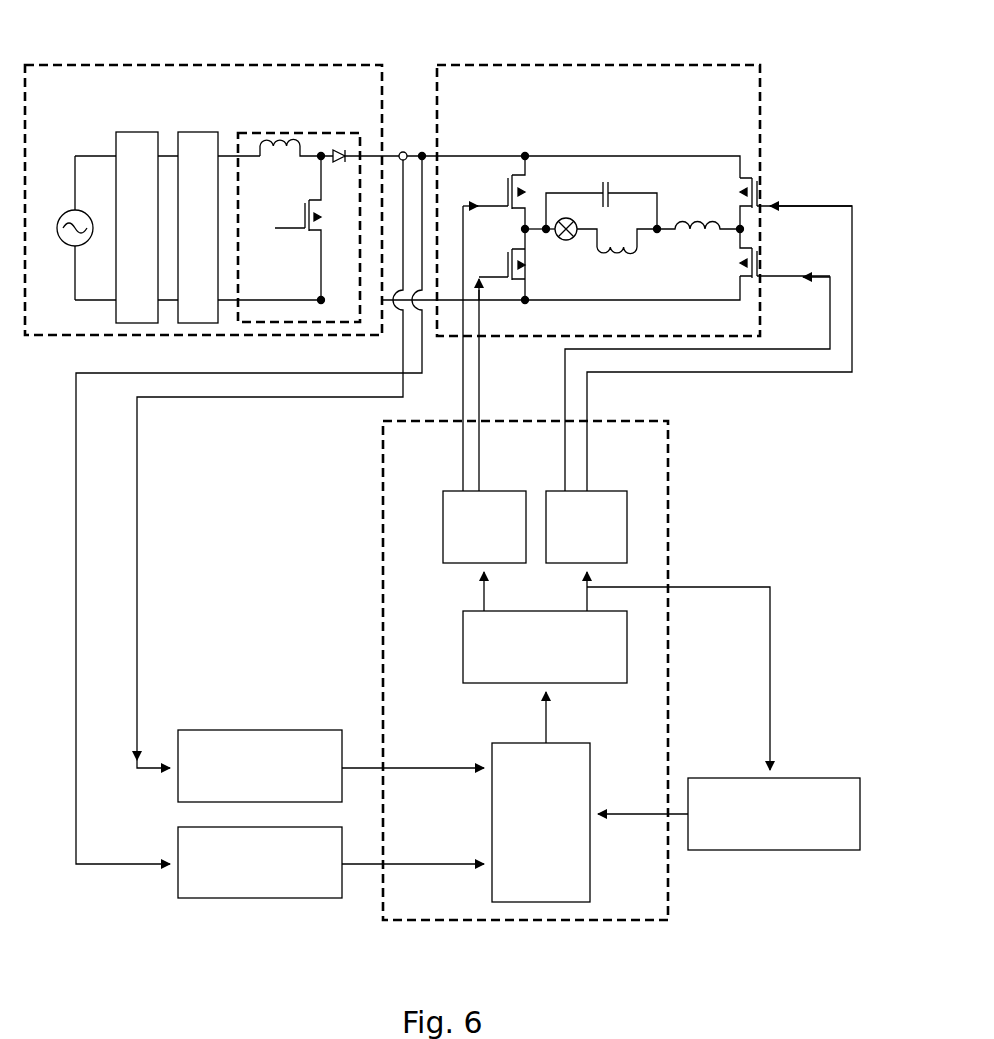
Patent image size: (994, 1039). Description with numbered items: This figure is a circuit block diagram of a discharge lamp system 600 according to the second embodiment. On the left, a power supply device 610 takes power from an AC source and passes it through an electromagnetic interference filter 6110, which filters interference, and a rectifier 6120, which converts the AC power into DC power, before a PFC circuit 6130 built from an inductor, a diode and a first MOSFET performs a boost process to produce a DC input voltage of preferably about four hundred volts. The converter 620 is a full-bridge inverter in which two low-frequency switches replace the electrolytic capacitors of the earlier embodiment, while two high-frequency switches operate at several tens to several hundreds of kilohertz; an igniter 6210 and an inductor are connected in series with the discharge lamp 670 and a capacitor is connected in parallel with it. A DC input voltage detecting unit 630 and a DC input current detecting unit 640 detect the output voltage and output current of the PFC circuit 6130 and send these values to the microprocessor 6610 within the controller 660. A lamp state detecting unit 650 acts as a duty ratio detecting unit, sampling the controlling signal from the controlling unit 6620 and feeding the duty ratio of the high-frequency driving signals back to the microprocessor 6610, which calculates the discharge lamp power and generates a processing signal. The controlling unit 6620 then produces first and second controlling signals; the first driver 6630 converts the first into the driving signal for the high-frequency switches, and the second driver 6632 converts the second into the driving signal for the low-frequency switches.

The discharge lamp system 600 is at (67, 33).
The power supply device 610 is at (375, 93).
The EMI filter 6110 is at (136, 132).
The rectifier 6120 is at (200, 132).
The PFC circuit 6130 is at (270, 134).
The converter 620 is at (753, 93).
The discharge lamp 670 is at (560, 240).
The inductor 6210 is at (606, 252).
The controller 660 is at (660, 448).
The microprocessor 6610 is at (579, 743).
The controlling unit 6620 is at (506, 611).
The first driver 6630 is at (606, 491).
The second driver 6632 is at (503, 491).
The DC input voltage detecting unit 630 is at (301, 730).
The DC input current detecting unit 640 is at (301, 898).
The lamp state detecting unit 650 is at (792, 778).